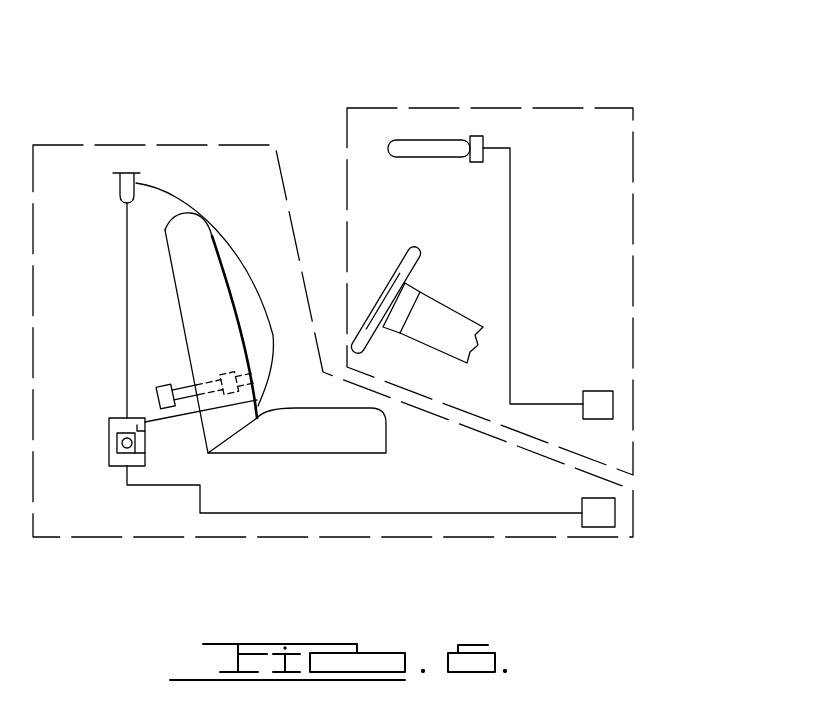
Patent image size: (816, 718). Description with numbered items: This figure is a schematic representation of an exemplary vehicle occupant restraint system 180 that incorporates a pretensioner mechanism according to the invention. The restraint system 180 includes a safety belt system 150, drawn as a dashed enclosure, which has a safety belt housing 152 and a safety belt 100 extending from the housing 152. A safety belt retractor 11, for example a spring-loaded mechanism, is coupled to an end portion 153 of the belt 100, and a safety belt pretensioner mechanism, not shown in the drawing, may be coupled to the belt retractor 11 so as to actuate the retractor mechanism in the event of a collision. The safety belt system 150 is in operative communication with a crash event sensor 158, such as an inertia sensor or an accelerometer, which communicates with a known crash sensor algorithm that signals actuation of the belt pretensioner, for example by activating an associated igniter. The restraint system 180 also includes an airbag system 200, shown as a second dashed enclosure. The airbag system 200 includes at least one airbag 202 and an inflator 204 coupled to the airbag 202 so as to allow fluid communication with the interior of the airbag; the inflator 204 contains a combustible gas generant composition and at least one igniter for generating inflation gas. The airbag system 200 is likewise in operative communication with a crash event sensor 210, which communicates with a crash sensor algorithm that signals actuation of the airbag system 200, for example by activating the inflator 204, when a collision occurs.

The vehicle occupant restraint system 180 is at (160, 102).
The safety belt system 150 is at (357, 538).
The safety belt 100 is at (223, 227).
The end portion 153 is at (138, 402).
The safety belt retractor 11 is at (118, 424).
The safety belt housing 152 is at (117, 445).
The crash event sensor 158 is at (587, 502).
The airbag system 200 is at (633, 307).
The airbag 202 is at (420, 145).
The inflator 204 is at (483, 139).
The crash event sensor 210 is at (598, 397).